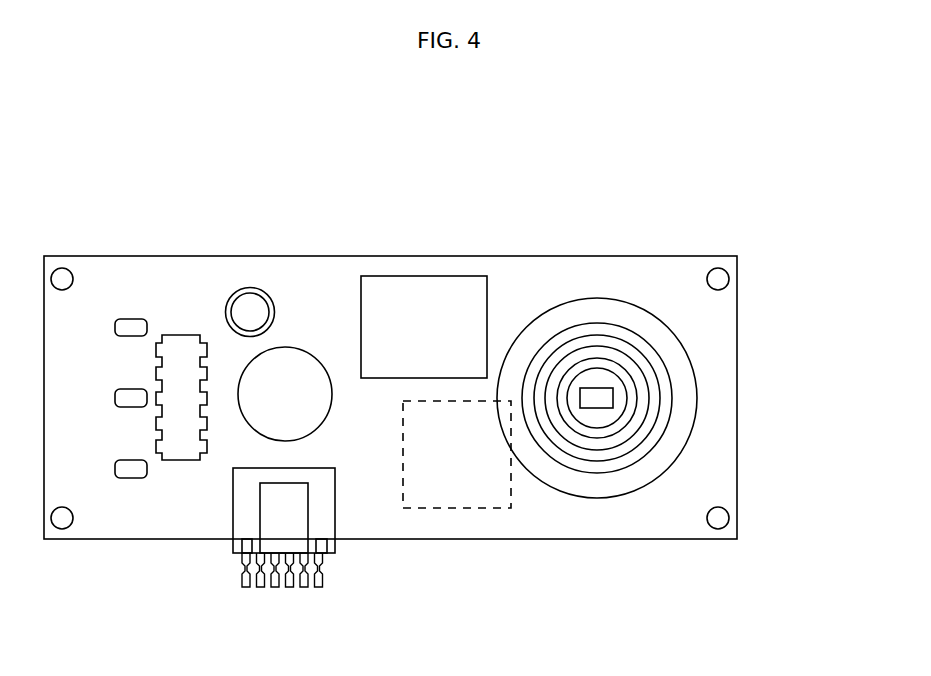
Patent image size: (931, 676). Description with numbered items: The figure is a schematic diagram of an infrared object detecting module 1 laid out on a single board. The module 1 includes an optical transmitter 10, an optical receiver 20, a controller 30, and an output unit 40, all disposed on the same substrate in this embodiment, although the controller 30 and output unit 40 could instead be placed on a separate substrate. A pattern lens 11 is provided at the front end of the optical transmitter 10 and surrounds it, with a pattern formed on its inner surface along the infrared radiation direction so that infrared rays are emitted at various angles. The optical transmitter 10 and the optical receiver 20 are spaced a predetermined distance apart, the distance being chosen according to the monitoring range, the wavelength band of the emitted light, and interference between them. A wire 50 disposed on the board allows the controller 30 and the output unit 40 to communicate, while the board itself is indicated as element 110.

The infrared object detecting module 1 is at (841, 107).
The optical transmitter 10 is at (292, 338).
The pattern lens 11 is at (324, 365).
The optical receiver 20 is at (698, 398).
The controller 30 is at (455, 509).
The output unit 40 is at (128, 318).
The wire 50 is at (232, 512).
The substrate 110 is at (737, 502).